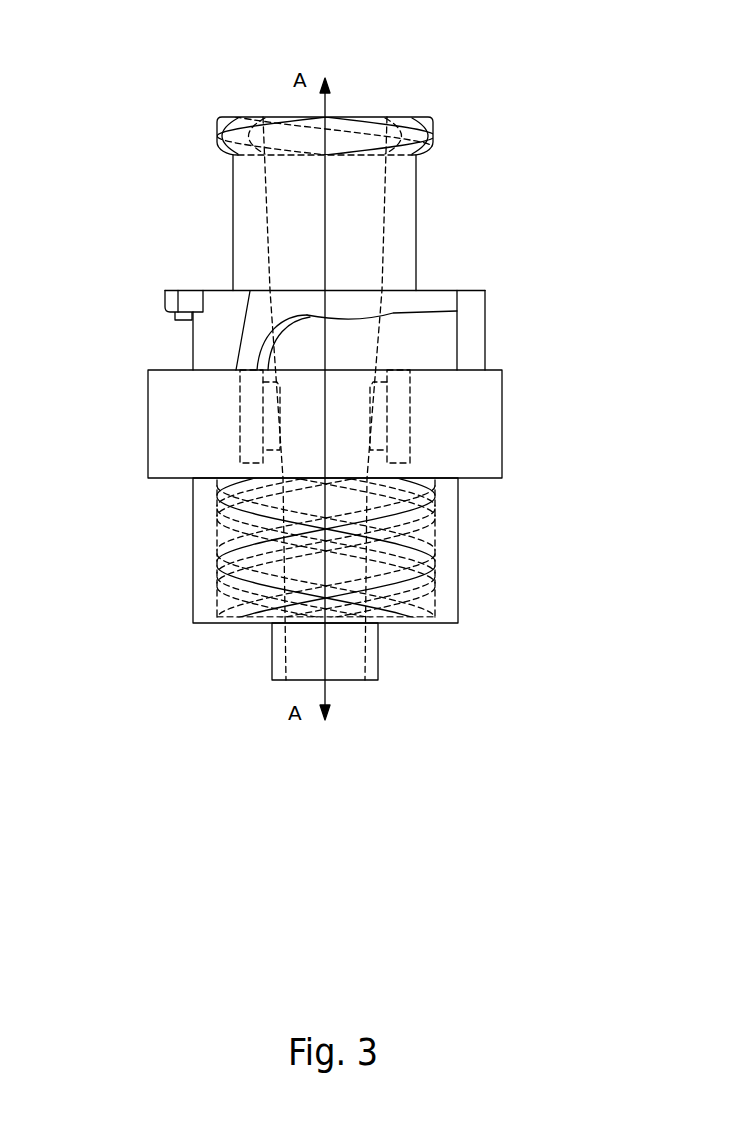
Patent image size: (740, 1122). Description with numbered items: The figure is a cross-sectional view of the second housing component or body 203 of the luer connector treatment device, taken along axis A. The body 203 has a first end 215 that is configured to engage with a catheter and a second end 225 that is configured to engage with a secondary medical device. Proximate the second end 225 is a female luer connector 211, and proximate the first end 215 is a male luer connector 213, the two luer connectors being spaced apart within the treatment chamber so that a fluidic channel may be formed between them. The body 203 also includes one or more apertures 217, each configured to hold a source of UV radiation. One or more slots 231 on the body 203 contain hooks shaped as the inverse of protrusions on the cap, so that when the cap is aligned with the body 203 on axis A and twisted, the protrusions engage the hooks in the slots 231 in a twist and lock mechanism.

The second housing component or body 203 is at (538, 113).
The female luer connector 211 is at (222, 135).
The male luer connector 213 is at (433, 545).
The first end 215 is at (365, 678).
The apertures 217 is at (272, 410).
The second end 225 is at (275, 115).
The slots 231 is at (282, 315).